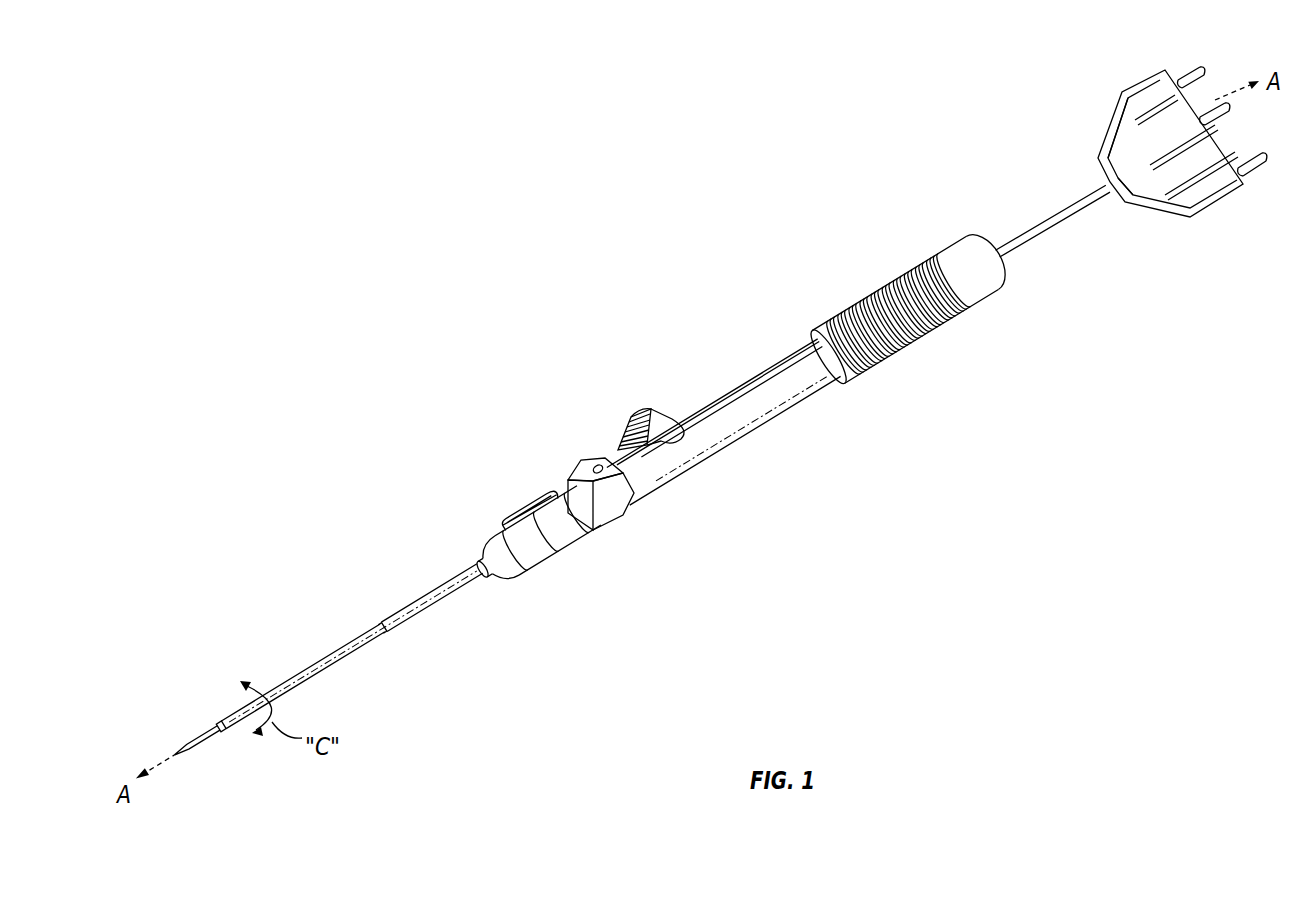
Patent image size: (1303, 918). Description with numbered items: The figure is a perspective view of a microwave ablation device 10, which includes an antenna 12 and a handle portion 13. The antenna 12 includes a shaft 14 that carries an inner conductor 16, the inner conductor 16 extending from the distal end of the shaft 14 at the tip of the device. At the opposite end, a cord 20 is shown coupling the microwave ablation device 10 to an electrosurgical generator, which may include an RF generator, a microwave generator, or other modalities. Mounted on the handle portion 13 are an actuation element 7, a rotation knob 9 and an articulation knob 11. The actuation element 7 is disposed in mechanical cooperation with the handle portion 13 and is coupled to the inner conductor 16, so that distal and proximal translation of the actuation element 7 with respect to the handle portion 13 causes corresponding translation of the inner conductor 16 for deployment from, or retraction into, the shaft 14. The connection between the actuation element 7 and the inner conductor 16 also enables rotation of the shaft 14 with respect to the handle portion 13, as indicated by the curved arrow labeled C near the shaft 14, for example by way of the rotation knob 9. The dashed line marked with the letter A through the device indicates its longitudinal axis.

The microwave ablation device 10 is at (541, 351).
The actuation element 7 is at (640, 418).
The rotation knob 9 is at (633, 503).
The articulation knob 11 is at (531, 503).
The antenna 12 is at (321, 687).
The handle portion 13 is at (784, 427).
The shaft 14 is at (324, 660).
The inner conductor 16 is at (198, 746).
The cord 20 is at (1047, 217).